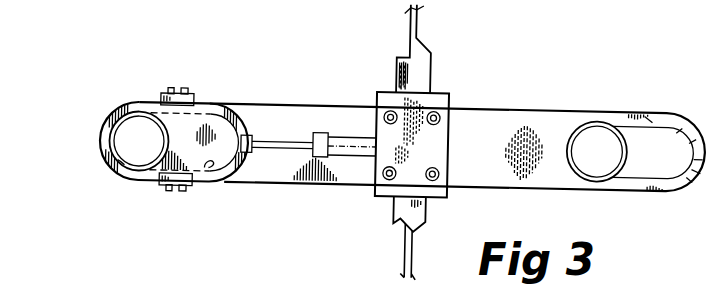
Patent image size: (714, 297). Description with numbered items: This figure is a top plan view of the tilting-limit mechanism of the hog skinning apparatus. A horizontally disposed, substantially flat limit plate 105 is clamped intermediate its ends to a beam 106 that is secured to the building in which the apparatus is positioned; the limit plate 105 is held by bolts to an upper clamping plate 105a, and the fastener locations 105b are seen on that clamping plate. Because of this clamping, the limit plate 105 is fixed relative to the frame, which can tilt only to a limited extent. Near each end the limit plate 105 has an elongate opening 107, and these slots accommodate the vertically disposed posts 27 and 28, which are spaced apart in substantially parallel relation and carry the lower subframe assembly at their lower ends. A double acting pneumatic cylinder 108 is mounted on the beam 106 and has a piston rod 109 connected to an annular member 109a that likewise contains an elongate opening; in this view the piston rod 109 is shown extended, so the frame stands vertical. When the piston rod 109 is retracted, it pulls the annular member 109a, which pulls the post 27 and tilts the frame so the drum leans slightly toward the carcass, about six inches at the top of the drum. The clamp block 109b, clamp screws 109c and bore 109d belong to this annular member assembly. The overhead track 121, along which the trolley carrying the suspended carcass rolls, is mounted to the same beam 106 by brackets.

The post 27 is at (110, 150).
The post 28 is at (621, 176).
The limit plate 105 is at (476, 108).
The upper clamping plate 105a is at (380, 194).
The fastener holes 105b is at (397, 120).
The beam 106 is at (431, 68).
The elongate opening 107 is at (204, 178).
The double acting pneumatic cylinder 108 is at (346, 136).
The piston rod 109 is at (282, 150).
The annular member 109a is at (236, 113).
The clamp block 109b is at (162, 94).
The clamp screws 109c is at (176, 88).
The bore 109d is at (125, 157).
The overhead track 121 is at (407, 267).